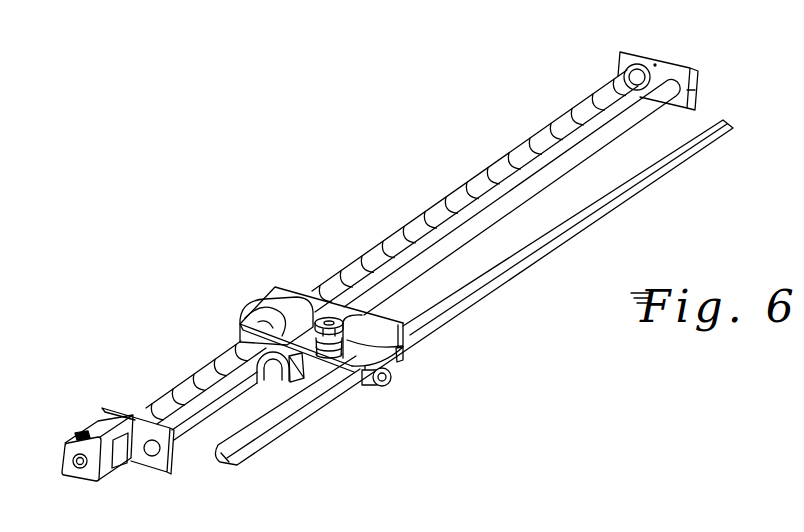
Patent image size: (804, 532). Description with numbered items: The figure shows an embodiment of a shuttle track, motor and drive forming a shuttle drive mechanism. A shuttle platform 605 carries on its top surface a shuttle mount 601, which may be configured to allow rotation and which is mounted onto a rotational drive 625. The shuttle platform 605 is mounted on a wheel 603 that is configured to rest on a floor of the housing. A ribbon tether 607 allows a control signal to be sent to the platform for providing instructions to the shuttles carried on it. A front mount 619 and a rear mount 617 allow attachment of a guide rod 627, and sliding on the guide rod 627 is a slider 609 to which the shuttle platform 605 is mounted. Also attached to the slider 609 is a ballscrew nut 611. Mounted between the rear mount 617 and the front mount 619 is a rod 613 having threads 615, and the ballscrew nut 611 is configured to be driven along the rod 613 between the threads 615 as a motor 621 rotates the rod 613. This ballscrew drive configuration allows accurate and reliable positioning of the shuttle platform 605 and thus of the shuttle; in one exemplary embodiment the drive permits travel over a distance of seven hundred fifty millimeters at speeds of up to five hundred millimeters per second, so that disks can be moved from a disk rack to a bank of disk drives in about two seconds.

The shuttle mount 601 is at (378, 318).
The wheel 603 is at (383, 387).
The shuttle platform 605 is at (403, 346).
The ribbon tether 607 is at (281, 430).
The slider 609 is at (203, 436).
The ballscrew nut 611 is at (243, 315).
The rod 613 is at (370, 250).
The threads 615 is at (442, 200).
The rear mount 617 is at (668, 62).
The front mount 619 is at (151, 463).
The motor 621 is at (100, 425).
The rotational drive 625 is at (405, 358).
The guide rod 627 is at (577, 160).